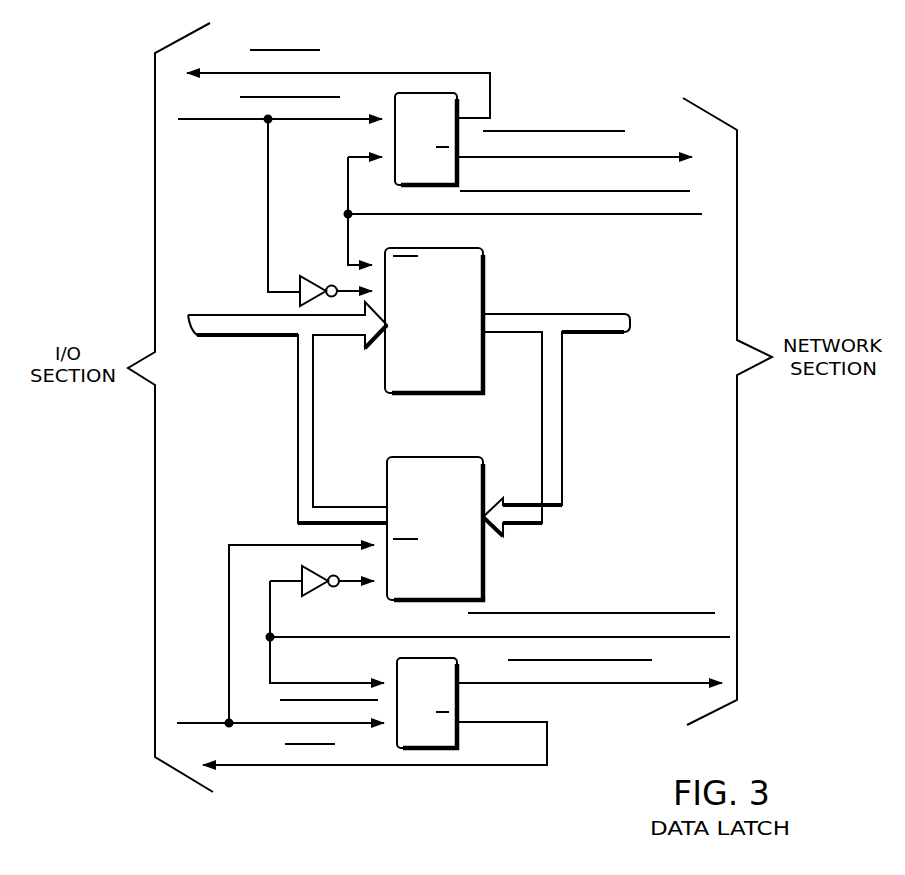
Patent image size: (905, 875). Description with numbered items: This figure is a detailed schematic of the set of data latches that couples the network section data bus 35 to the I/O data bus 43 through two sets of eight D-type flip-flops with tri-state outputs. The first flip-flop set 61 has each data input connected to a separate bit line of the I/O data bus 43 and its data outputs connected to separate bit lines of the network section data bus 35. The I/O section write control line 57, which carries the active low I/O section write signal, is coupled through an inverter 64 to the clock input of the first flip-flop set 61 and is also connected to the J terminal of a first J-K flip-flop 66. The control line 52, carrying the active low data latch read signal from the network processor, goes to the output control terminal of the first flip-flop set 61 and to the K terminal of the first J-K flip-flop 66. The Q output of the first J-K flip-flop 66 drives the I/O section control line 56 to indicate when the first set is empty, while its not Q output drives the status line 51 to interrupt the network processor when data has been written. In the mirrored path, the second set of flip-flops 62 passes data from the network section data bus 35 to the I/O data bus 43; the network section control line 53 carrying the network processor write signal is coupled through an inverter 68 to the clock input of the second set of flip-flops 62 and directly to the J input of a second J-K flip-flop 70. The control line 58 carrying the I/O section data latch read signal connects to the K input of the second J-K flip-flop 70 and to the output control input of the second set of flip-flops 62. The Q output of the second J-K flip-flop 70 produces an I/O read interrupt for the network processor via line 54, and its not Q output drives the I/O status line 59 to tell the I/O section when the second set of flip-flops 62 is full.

The network section data bus 35 is at (595, 333).
The I/O data bus 43 is at (235, 337).
The status line 51 is at (670, 157).
The control line 52 is at (652, 215).
The network section control line 53 is at (718, 638).
The line 54 is at (668, 686).
The I/O section control line 56 is at (222, 73).
The I/O section write control line 57 is at (190, 121).
The control line 58 is at (205, 723).
The I/O status line 59 is at (232, 767).
The first flip-flop set 61 is at (484, 388).
The second set of flip-flops 62 is at (435, 457).
The inverter 64 is at (313, 276).
The first J-K flip-flop 66 is at (395, 137).
The inverter 68 is at (318, 590).
The second J-K flip-flop 70 is at (397, 664).